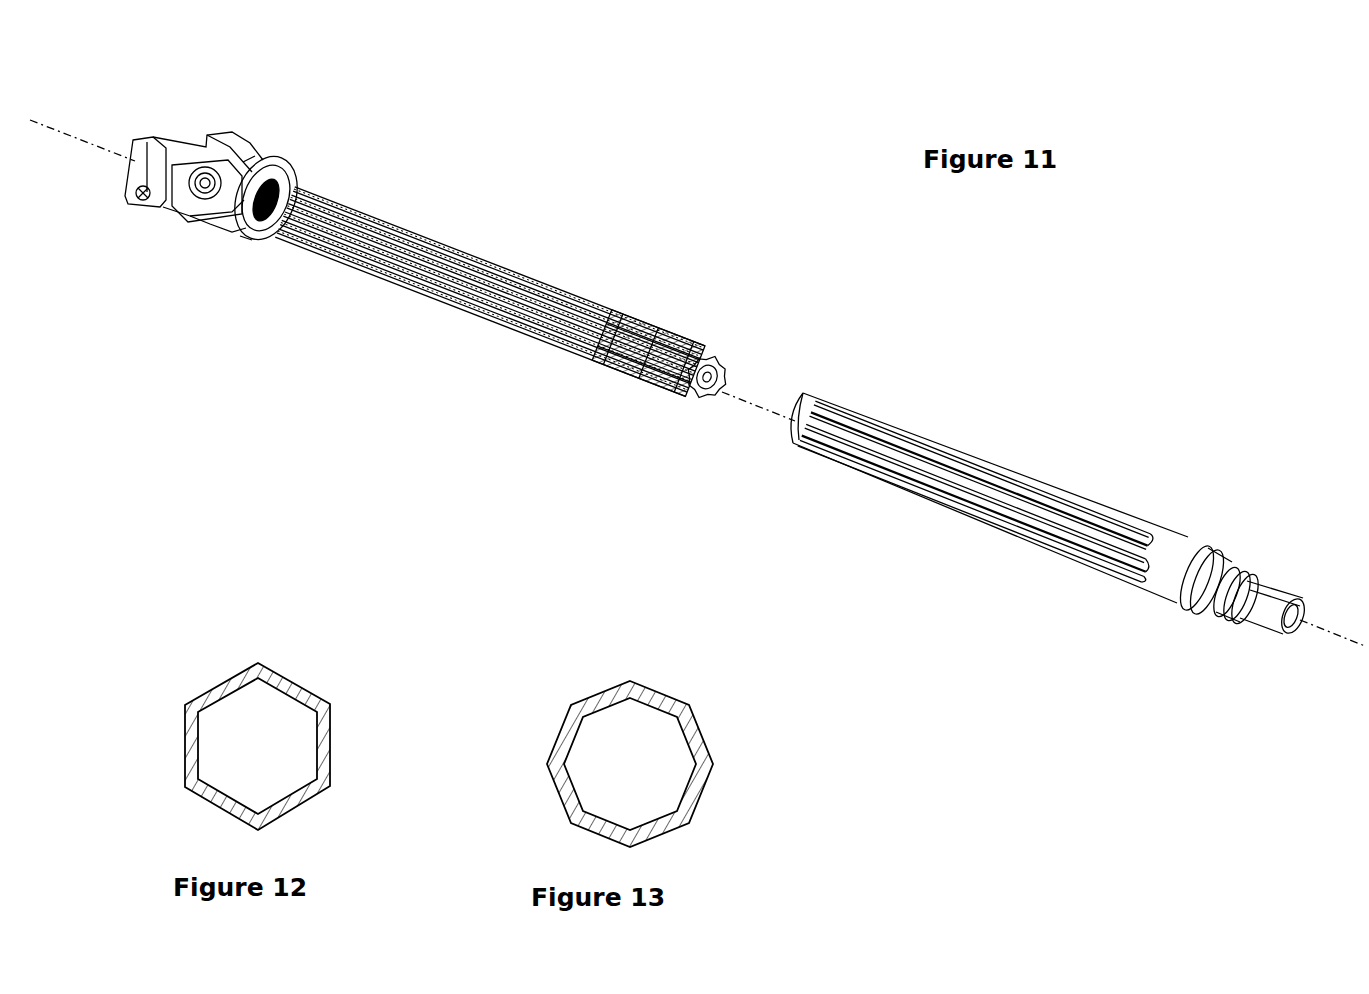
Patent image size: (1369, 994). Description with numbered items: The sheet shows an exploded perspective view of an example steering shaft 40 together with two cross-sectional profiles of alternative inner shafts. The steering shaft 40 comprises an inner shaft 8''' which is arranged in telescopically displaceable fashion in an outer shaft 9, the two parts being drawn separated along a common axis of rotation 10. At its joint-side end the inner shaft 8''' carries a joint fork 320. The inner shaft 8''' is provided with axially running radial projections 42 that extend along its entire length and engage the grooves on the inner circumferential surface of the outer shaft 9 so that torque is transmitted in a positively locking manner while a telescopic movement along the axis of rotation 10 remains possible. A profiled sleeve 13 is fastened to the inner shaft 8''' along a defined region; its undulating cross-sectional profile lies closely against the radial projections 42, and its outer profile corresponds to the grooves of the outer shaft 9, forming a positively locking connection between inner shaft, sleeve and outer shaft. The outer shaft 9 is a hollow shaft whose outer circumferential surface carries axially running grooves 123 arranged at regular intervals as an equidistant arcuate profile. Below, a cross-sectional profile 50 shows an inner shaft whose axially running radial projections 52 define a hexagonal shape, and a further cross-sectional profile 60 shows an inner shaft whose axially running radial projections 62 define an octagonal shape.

In FIG. 11, the joint fork 320 is at (253, 150).
In FIG. 11, the inner shaft 8''' is at (490, 270).
In FIG. 11, the profiled sleeve 13 is at (648, 325).
In FIG. 11, the axis of rotation 10 is at (760, 405).
In FIG. 11, the axially running radial projections 42 is at (716, 396).
In FIG. 11, the steering shaft 40 is at (442, 255).
In FIG. 11, the outer shaft 9 is at (1050, 514).
In FIG. 11, the axially running grooves 123 is at (853, 437).
In FIG. 12, the cross-sectional profile 50 is at (185, 710).
In FIG. 12, the axially running radial projections 52 is at (330, 704).
In FIG. 13, the cross-sectional profile 60 is at (629, 711).
In FIG. 13, the axially running radial projections 62 is at (690, 823).